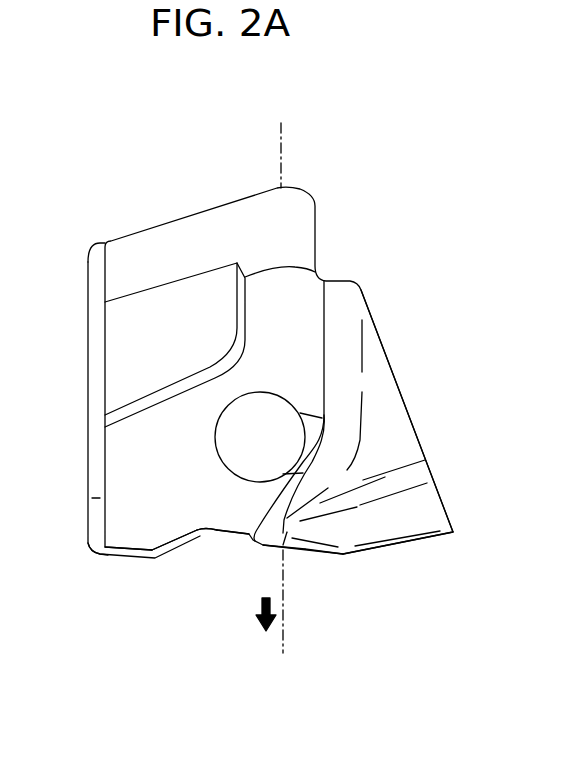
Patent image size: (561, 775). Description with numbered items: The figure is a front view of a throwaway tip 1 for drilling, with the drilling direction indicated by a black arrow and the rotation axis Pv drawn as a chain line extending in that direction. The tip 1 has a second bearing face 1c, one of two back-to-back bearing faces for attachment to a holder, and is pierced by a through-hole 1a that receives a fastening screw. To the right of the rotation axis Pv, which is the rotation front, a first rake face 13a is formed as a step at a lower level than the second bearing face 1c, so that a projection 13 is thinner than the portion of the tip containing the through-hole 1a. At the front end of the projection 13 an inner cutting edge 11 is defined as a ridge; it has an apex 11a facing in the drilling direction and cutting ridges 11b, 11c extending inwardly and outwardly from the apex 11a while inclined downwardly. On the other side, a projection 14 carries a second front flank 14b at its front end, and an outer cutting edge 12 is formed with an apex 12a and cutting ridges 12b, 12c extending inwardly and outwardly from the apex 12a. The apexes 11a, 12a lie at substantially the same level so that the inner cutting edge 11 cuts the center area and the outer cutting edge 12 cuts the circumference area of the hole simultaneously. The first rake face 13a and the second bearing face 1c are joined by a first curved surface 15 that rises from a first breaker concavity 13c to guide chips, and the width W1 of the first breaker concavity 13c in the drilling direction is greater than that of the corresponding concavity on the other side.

The throwaway tip 1 is at (127, 190).
The rotation axis Pv is at (278, 143).
The through-hole 1a is at (281, 398).
The second bearing face 1c is at (280, 302).
The inner cutting edge 11 is at (490, 688).
The apex 11a is at (343, 553).
The cutting ridge 11b is at (302, 550).
The cutting ridge 11c is at (398, 547).
The outer cutting edge 12 is at (255, 693).
The apex 12a is at (148, 557).
The cutting ridge 12b is at (193, 543).
The cutting ridge 12c is at (123, 558).
The projection 13 is at (405, 407).
The first rake face 13a is at (378, 393).
The first breaker concavity 13c is at (427, 537).
The projection 14 is at (87, 440).
The second front flank 14b is at (103, 557).
The first curved surface 15 is at (328, 468).
The width of first breaker concavity W1 is at (428, 458).